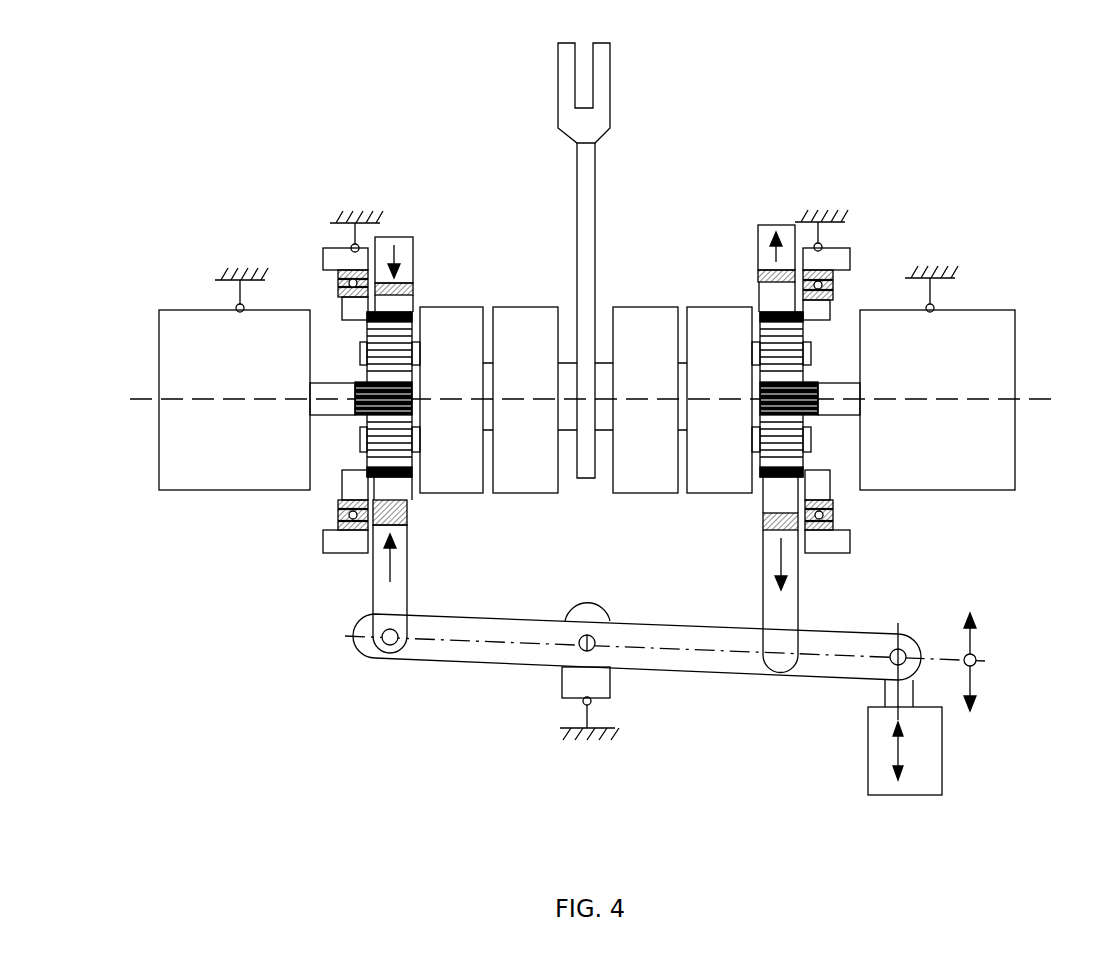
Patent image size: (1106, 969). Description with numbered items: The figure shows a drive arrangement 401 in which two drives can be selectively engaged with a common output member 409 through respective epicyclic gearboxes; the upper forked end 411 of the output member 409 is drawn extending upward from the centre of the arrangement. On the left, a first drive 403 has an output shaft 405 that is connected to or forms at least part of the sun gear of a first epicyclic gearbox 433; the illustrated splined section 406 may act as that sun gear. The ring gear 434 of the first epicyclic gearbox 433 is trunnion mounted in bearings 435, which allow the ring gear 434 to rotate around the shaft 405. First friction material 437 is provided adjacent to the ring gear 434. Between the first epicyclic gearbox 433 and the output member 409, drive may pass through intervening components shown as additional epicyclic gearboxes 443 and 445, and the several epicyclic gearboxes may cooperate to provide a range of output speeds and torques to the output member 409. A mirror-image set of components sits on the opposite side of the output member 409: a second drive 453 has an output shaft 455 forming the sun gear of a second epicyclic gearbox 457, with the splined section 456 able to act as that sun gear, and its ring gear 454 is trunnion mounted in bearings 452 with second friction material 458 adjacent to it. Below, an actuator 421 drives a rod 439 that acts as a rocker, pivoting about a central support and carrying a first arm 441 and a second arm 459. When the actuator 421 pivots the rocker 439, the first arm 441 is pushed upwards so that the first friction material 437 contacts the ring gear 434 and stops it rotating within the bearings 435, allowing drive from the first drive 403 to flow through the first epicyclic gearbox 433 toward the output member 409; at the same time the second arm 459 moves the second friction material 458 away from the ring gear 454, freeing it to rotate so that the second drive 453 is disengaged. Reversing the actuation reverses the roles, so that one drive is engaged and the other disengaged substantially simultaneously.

The drive arrangement 401 is at (840, 125).
The first drive 403 is at (176, 308).
The output shaft 405 is at (338, 418).
The splined section 406 is at (356, 383).
The output member 409 is at (595, 178).
The shift fork 411 is at (610, 80).
The actuator 421 is at (903, 798).
The first epicyclic gearbox 433 is at (337, 562).
The ring gear 434 is at (413, 300).
The bearings 435 is at (338, 272).
The first friction material 437 is at (410, 522).
The rod 439 is at (680, 672).
The first arm 441 is at (410, 600).
The additional epicyclic gearbox 443 is at (451, 400).
The additional epicyclic gearbox 445 is at (530, 400).
The bearings 452 is at (835, 295).
The second drive 453 is at (1010, 308).
The ring gear 454 is at (759, 297).
The output shaft 455 is at (838, 416).
The splined section 456 is at (840, 360).
The second epicyclic gearbox 457 is at (848, 305).
The second friction material 458 is at (763, 512).
The second arm 459 is at (800, 590).